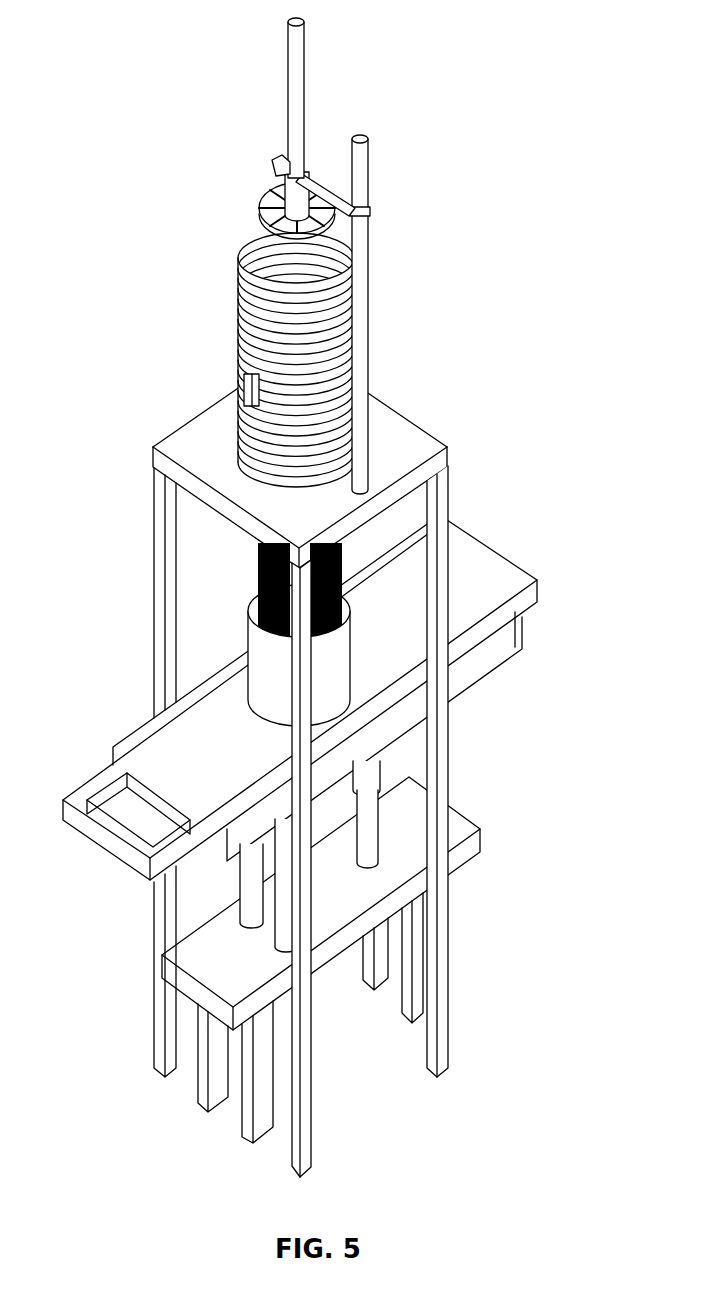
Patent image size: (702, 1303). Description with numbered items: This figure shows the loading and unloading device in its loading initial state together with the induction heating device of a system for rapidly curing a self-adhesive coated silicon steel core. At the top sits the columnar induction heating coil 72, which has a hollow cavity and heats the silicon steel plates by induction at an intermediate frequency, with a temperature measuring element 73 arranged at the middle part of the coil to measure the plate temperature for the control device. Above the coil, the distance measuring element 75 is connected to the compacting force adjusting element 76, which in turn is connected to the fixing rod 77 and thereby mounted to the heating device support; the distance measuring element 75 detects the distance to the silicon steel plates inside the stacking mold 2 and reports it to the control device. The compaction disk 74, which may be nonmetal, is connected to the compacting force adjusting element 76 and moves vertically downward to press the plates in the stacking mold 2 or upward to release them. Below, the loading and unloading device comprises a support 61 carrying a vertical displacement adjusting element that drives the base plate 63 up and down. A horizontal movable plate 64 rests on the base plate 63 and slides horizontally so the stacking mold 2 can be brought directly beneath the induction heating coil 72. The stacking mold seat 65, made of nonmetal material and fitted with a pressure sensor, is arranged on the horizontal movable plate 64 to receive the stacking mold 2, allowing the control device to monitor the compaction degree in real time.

The stacking mold 2 is at (253, 578).
The support 61 is at (457, 832).
The base plate 63 is at (503, 643).
The horizontal movable plate 64 is at (485, 578).
The stacking mold seat 65 is at (268, 686).
The induction heating coil 72 is at (240, 320).
The temperature measuring element 73 is at (246, 383).
The compaction disk 74 is at (273, 207).
The distance measuring element 75 is at (280, 165).
The compacting force adjusting element 76 is at (305, 165).
The fixing rod 77 is at (360, 353).